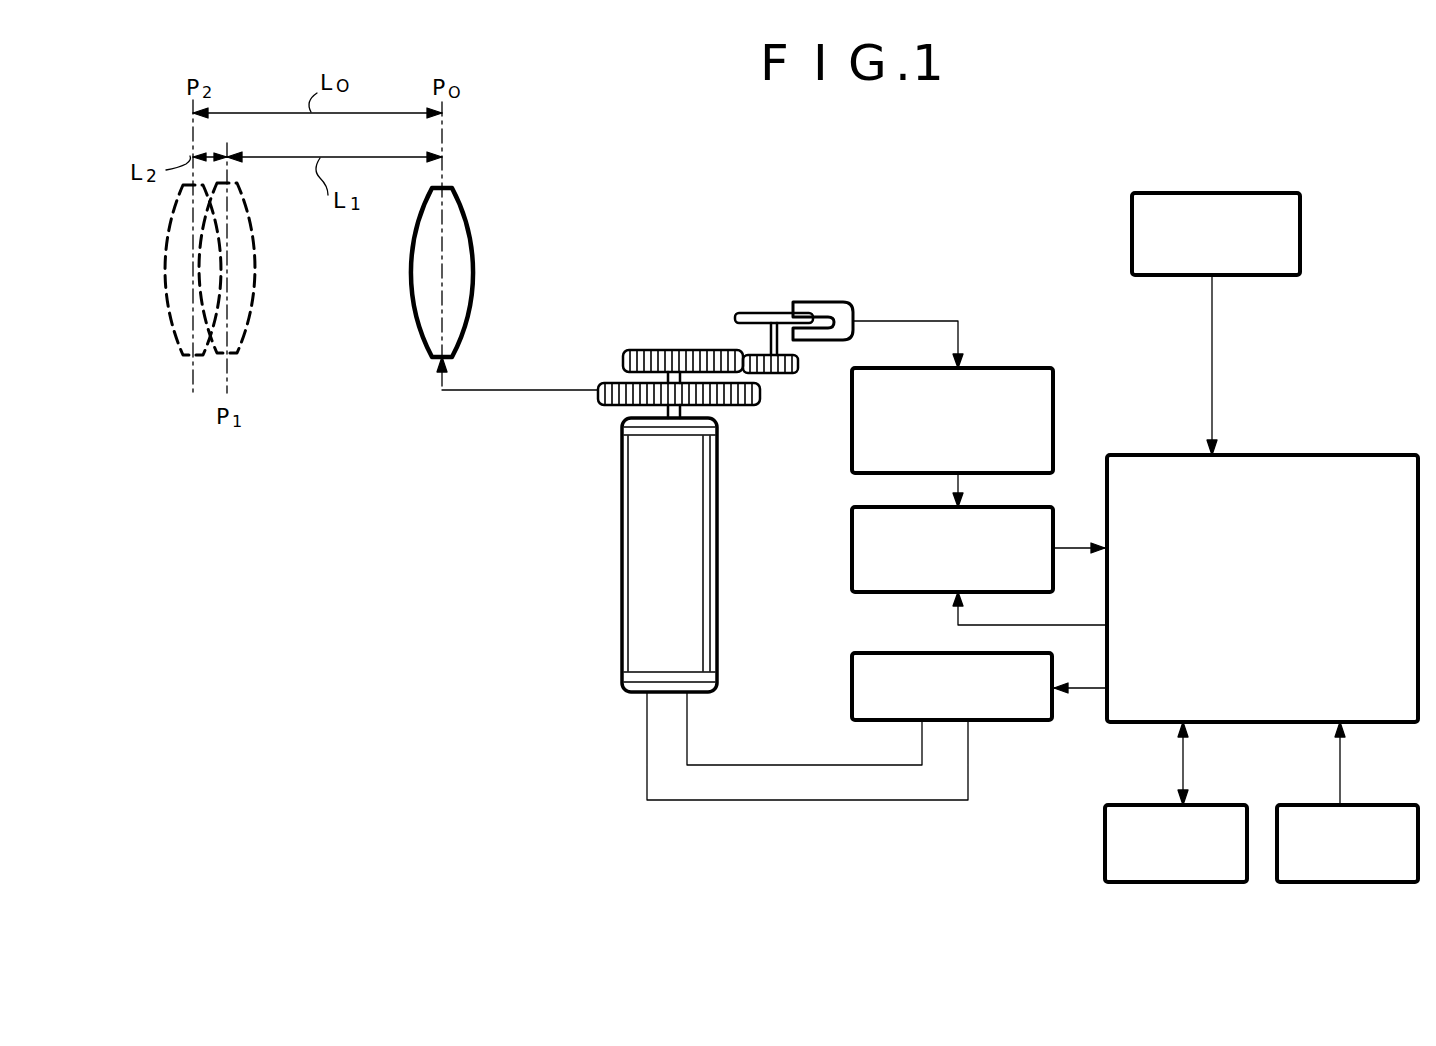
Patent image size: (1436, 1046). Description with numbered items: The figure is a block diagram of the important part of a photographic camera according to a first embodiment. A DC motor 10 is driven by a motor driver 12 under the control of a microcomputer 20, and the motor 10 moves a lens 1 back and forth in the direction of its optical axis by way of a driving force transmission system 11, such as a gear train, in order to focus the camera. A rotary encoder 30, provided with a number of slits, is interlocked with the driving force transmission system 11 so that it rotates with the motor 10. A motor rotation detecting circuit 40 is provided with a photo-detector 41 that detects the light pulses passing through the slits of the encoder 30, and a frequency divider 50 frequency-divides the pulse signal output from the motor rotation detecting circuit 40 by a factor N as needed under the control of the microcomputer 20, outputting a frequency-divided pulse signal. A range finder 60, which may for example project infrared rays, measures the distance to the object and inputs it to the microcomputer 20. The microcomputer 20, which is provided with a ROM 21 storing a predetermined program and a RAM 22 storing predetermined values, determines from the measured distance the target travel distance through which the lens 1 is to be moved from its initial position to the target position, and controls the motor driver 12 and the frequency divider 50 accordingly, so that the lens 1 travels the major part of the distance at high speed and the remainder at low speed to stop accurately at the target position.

The lens 1 is at (464, 297).
The DC motor 10 is at (628, 543).
The driving force transmission system 11 is at (600, 405).
The motor driver 12 is at (853, 674).
The microcomputer 20 is at (1334, 454).
The ROM 21 is at (1382, 805).
The RAM 22 is at (1232, 805).
The rotary encoder 30 is at (765, 292).
The motor rotation detecting circuit 40 is at (1042, 368).
The photo-detector 41 is at (840, 304).
The frequency divider 50 is at (851, 552).
The range finder 60 is at (1205, 193).